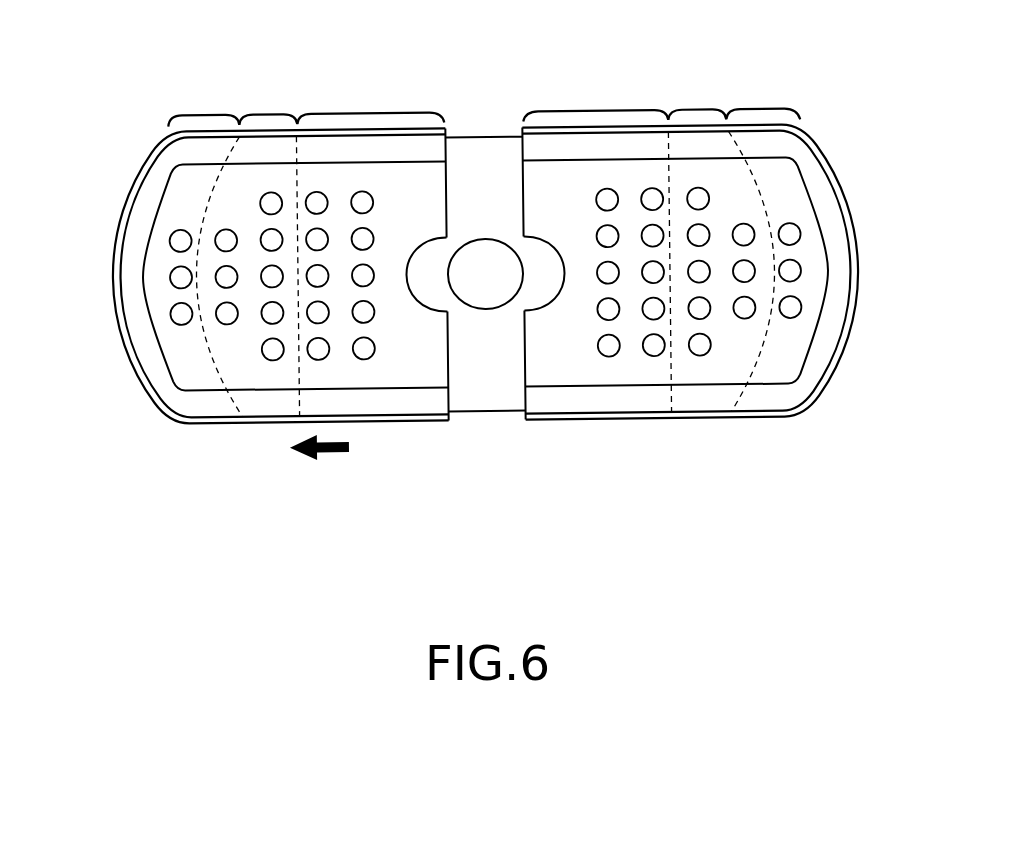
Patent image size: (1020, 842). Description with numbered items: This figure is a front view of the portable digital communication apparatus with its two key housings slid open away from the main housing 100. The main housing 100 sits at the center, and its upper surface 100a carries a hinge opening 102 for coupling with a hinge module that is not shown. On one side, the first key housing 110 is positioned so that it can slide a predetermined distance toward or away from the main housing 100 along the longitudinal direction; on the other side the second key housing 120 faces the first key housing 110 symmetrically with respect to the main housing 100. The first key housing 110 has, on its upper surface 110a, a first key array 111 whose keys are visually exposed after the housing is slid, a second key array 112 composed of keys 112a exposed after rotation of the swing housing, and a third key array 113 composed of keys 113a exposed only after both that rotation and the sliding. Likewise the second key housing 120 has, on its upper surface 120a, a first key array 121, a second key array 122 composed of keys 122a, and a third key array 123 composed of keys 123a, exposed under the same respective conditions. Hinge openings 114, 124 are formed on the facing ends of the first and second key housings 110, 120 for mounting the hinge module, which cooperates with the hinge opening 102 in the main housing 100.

The main housing 100 is at (476, 102).
The upper surface of the main housing 100a is at (485, 392).
The hinge opening 102 is at (497, 260).
The first key housing 110 is at (104, 245).
The upper surface of the first key housing 110a is at (183, 155).
The first key array 111 is at (206, 115).
The second key array 112 is at (271, 115).
The keys 112a is at (227, 315).
The third key array 113 is at (370, 115).
The keys 113a is at (365, 200).
The hinge opening 114 is at (418, 303).
The second key housing 120 is at (878, 270).
The upper surface of the second key housing 120a is at (788, 192).
The first key array 121 is at (762, 112).
The second key array 122 is at (694, 112).
The keys 122a is at (702, 347).
The third key array 123 is at (595, 112).
The keys 123a is at (608, 348).
The hinge opening 124 is at (553, 303).